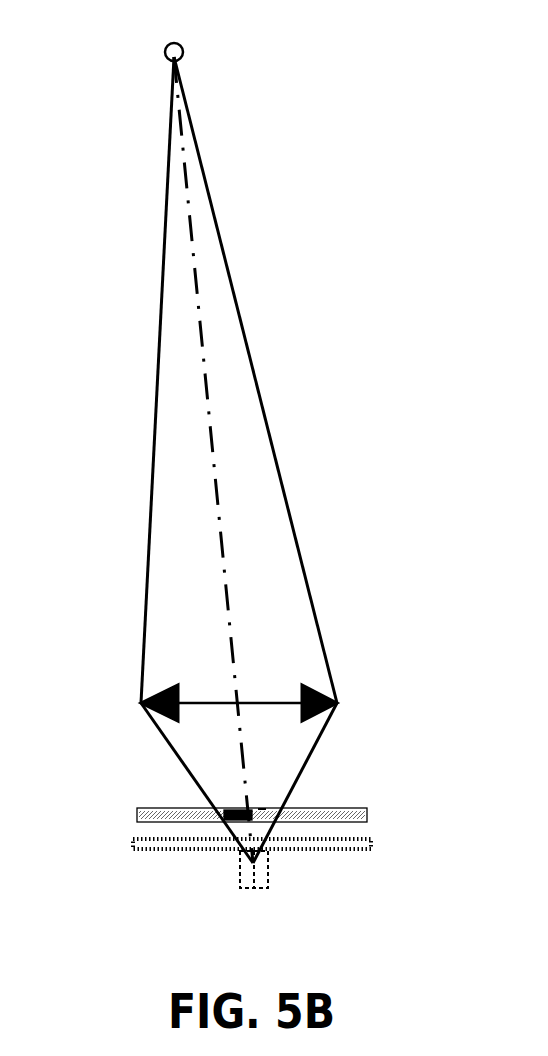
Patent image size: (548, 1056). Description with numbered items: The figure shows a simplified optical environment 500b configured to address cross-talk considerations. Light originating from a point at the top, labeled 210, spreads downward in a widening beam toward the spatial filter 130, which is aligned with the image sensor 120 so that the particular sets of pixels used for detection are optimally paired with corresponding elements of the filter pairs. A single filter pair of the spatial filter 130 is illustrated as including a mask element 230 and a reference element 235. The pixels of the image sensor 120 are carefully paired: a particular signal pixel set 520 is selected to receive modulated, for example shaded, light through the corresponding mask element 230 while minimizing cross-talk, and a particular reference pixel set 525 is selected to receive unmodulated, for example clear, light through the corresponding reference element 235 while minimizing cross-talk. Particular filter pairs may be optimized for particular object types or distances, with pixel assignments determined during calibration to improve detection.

The simplified optical environment 500b is at (117, 88).
The light source 210 is at (186, 50).
The spatial filter 130 is at (165, 808).
The mask element 230 is at (233, 809).
The reference element 235 is at (263, 808).
The image sensor 120 is at (160, 850).
The signal pixel set 520 is at (248, 888).
The reference pixel set 525 is at (259, 888).